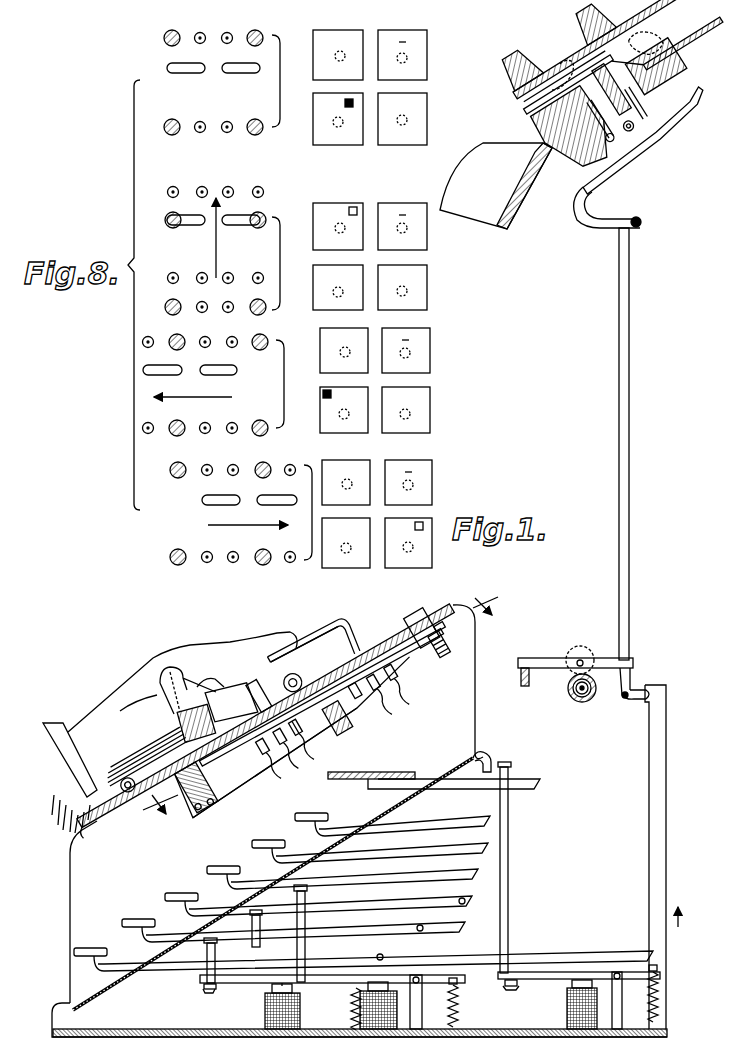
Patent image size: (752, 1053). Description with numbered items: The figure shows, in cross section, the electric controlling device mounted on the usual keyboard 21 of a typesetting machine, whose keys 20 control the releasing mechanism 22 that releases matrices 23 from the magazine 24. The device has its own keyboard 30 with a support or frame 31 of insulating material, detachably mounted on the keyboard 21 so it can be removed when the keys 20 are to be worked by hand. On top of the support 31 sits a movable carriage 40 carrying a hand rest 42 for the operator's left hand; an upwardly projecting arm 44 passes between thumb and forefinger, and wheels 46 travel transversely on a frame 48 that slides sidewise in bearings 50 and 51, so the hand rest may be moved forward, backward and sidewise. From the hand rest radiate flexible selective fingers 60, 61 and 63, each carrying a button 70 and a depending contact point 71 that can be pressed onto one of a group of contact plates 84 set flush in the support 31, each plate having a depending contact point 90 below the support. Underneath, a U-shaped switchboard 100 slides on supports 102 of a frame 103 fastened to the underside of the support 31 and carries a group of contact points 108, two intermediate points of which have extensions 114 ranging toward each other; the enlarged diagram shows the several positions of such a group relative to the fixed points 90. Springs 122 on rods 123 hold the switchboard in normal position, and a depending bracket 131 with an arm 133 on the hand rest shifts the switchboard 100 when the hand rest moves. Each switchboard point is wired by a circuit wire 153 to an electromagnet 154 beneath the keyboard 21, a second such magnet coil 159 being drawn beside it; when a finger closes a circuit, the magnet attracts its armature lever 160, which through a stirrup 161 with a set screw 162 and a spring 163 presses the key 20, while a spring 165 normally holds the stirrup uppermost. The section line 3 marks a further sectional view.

In FIG. 1, the section line 3 is at (324, 700).
In FIG. 1, the keys 20 is at (247, 878).
In FIG. 1, the keyboard 21 is at (491, 745).
In FIG. 1, the releasing mechanism 22 is at (660, 122).
In FIG. 1, the matrices 23 is at (578, 60).
In FIG. 1, the magazine 24 is at (693, 32).
In FIG. 1, the keyboard 30 is at (349, 605).
In FIG. 1, the support or frame 31 is at (262, 704).
In FIG. 1, the carriage 40 is at (70, 778).
In FIG. 1, the hand rest 42 is at (152, 733).
In FIG. 1, the arm 44 is at (170, 670).
In FIG. 1, the wheels 46 is at (315, 721).
In FIG. 1, the frame 48 is at (185, 798).
In FIG. 1, the bearings 50 is at (204, 729).
In FIG. 1, the bearings 51 is at (80, 895).
In FIG. 1, the selective finger 60 is at (231, 702).
In FIG. 1, the selective finger 61 is at (301, 640).
In FIG. 8, the selective finger 63 is at (362, 92).
In FIG. 1, the button 70 is at (297, 644).
In FIG. 1, the contact point 71 is at (315, 661).
In FIG. 8, the group of contact plates 84 is at (326, 196).
In FIG. 8, the contact point 90 is at (164, 39).
In FIG. 1, the switchboard 100 is at (346, 720).
In FIG. 1, the supports 102 is at (405, 681).
In FIG. 1, the frame 103 is at (409, 617).
In FIG. 8, the group of contact points 108 is at (214, 83).
In FIG. 8, the extensions 114 is at (232, 63).
In FIG. 1, the springs 122 is at (447, 649).
In FIG. 1, the rods 123 is at (473, 631).
In FIG. 1, the bracket 131 is at (211, 820).
In FIG. 1, the arm 133 is at (283, 778).
In FIG. 1, the circuit wire 153 is at (347, 720).
In FIG. 1, the electromagnet 154 is at (567, 1024).
In FIG. 1, the magnet coil 159 is at (265, 1024).
In FIG. 1, the armature lever 160 is at (256, 983).
In FIG. 1, the stirrup 161 is at (306, 920).
In FIG. 1, the set screw 162 is at (508, 766).
In FIG. 1, the spring 163 is at (203, 989).
In FIG. 1, the spring 165 is at (355, 1012).